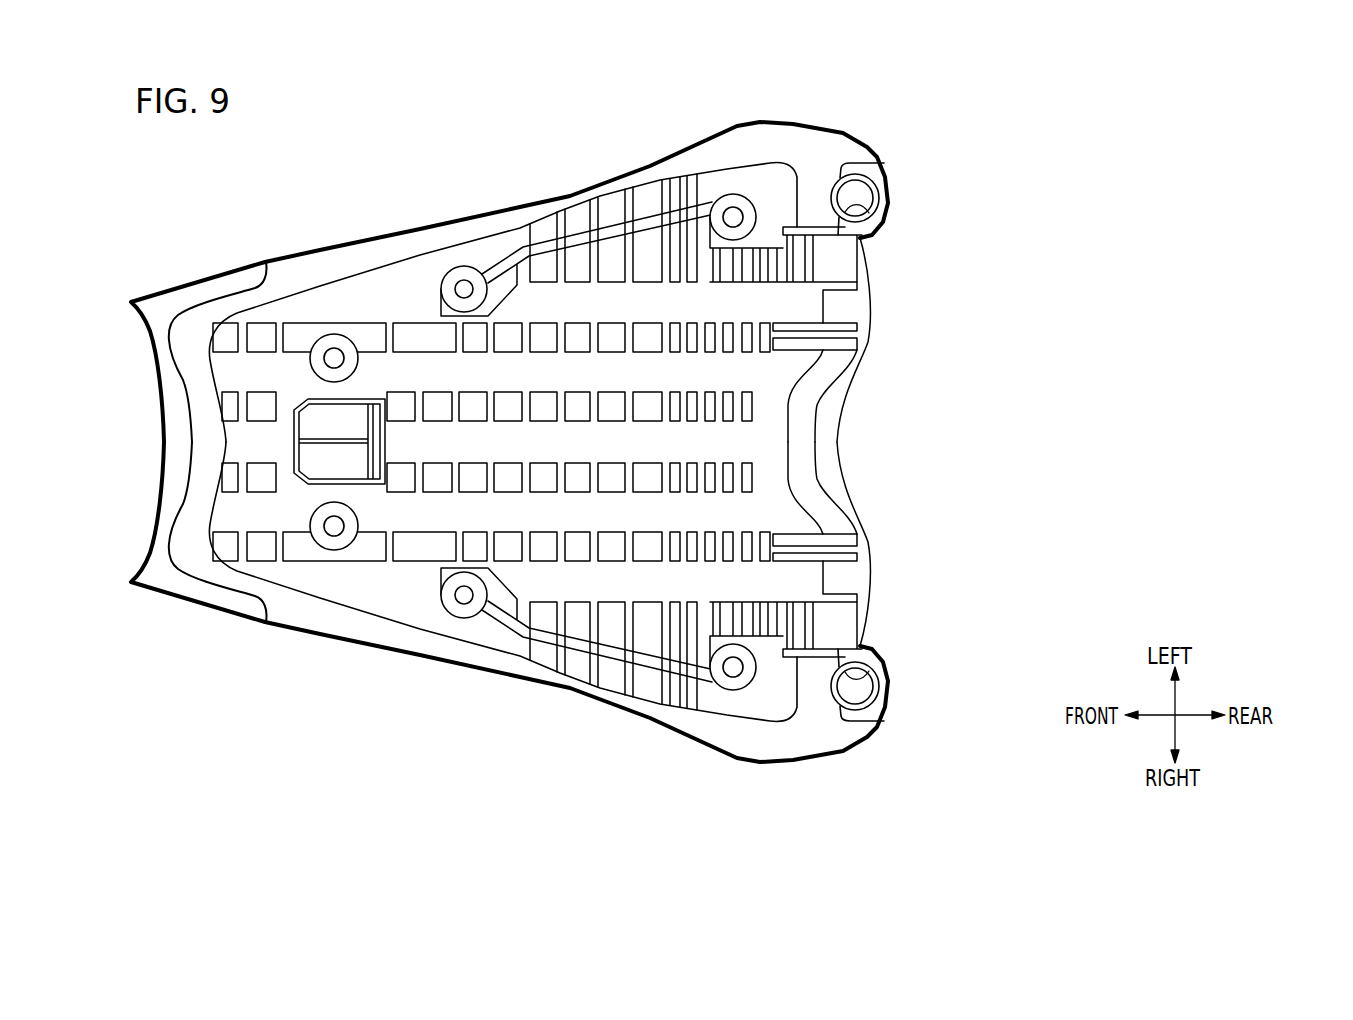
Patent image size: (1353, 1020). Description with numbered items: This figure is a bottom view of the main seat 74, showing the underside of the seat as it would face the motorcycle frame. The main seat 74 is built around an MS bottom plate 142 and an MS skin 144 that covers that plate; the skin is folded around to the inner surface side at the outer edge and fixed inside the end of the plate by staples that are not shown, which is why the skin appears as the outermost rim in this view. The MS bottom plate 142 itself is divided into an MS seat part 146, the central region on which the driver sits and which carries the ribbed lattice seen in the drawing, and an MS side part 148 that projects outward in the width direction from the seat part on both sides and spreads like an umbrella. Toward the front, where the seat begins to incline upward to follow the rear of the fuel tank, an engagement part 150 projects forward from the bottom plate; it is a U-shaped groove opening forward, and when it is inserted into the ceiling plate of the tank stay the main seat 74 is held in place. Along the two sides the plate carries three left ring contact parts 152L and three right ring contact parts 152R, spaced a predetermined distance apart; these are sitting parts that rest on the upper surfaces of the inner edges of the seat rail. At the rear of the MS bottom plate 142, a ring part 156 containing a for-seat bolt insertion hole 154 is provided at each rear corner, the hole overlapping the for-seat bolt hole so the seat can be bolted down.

The main seat 74 is at (332, 133).
The MS skin 144 is at (216, 284).
The MS side part 148 is at (823, 147).
The MS seat part 146 is at (770, 460).
The MS bottom plate 142 is at (1030, 374).
The engagement part 150 is at (322, 427).
The left ring contact part 152L is at (720, 212).
The right ring contact part 152R is at (720, 672).
The for-seat bolt insertion hole 154 is at (871, 218).
The ring part 156 is at (862, 197).